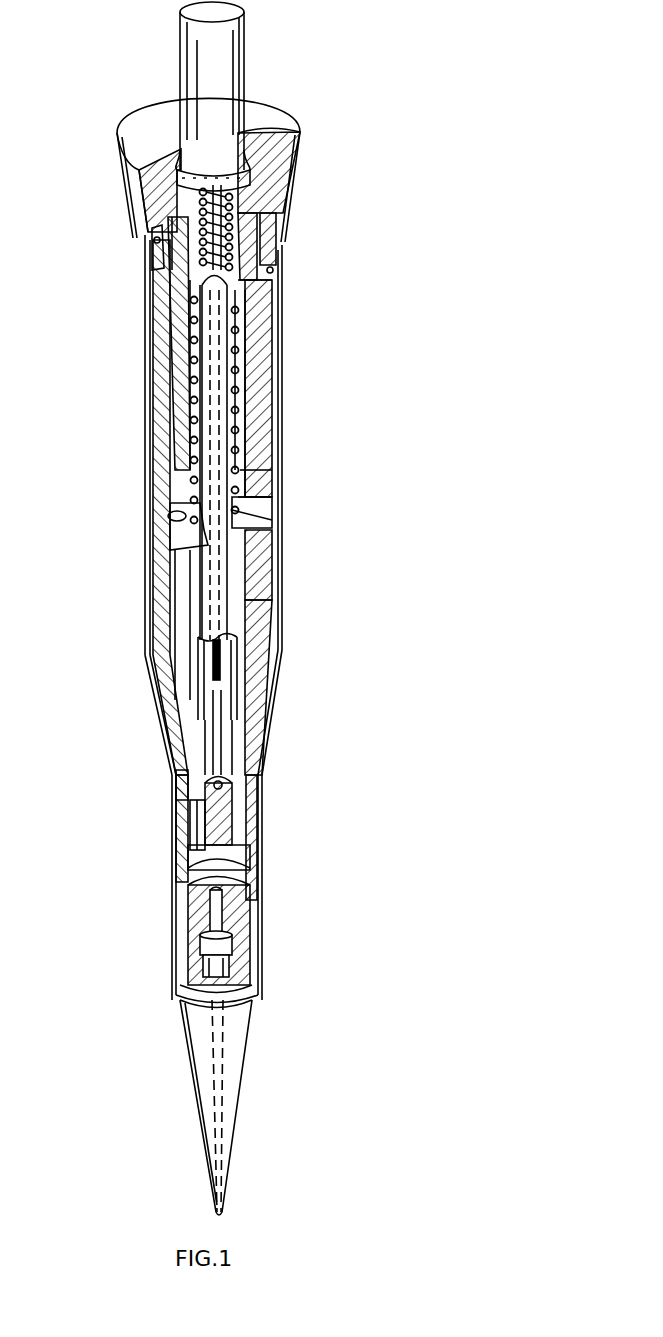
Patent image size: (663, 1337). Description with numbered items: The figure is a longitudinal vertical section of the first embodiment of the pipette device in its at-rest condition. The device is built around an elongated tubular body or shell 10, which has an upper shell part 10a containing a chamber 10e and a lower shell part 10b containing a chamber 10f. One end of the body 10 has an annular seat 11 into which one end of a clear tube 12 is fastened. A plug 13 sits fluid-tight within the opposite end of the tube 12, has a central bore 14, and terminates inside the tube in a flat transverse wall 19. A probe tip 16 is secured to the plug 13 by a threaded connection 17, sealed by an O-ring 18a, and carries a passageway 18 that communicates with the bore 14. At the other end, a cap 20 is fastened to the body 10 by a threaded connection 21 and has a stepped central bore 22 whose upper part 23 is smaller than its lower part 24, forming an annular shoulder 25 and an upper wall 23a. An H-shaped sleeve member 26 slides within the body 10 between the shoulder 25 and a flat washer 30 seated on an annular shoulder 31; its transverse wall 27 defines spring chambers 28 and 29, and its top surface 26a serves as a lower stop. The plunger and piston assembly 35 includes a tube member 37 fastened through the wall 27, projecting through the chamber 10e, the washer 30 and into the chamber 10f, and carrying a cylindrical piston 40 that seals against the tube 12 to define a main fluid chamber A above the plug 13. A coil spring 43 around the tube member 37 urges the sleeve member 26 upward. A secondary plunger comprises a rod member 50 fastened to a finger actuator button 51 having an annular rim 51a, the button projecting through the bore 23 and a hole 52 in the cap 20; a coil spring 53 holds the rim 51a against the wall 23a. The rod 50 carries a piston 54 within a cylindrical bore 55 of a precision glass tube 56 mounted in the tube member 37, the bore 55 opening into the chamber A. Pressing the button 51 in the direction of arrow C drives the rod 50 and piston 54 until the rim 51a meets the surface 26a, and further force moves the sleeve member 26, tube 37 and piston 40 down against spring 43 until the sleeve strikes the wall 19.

The tubular body or shell 10 is at (143, 312).
The upper shell part 10a is at (262, 315).
The lower shell part 10b is at (268, 601).
The chamber 10e is at (255, 471).
The chamber 10f is at (240, 638).
The annular seat 11 is at (165, 520).
The tube 12 is at (253, 849).
The plug 13 is at (253, 910).
The bore 14 is at (205, 883).
The probe tip or nozzle 16 is at (248, 1035).
The threaded connection 17 is at (228, 950).
The central bore or passageway 18 is at (222, 1078).
The O-ring 18a is at (225, 992).
The flat transverse wall or surface 19 is at (200, 895).
The cap 20 is at (290, 175).
The threaded connection 21 is at (280, 246).
The central bore 22 is at (272, 270).
The upper part of bore 23 is at (258, 182).
The upper wall of cap bore 23a is at (200, 128).
The lower part of bore 24 is at (200, 256).
The annular shoulder 25 is at (170, 226).
The sleeve member 26 is at (253, 365).
The top surface of sleeve member 26a is at (240, 209).
The transverse wall 27 is at (247, 282).
The spring chamber 28 is at (192, 280).
The spring chamber 29 is at (243, 383).
The flat washer 30 is at (250, 518).
The annular shoulder 31 is at (245, 548).
The plunger and piston assembly 35 is at (247, 58).
The tube member 37 is at (230, 585).
The cylindrical piston 40 is at (210, 865).
The coil spring 43 is at (247, 395).
The rod member 50 is at (215, 715).
The finger actuator button 51 is at (207, 49).
The annular rim 51a is at (180, 178).
The hole 52 is at (246, 135).
The coil spring 53 is at (200, 204).
The piston 54 is at (232, 783).
The cylindrical bore 55 is at (200, 820).
The tube 56 is at (235, 791).
The main fluid chamber A is at (195, 875).
The arrow C is at (398, 360).